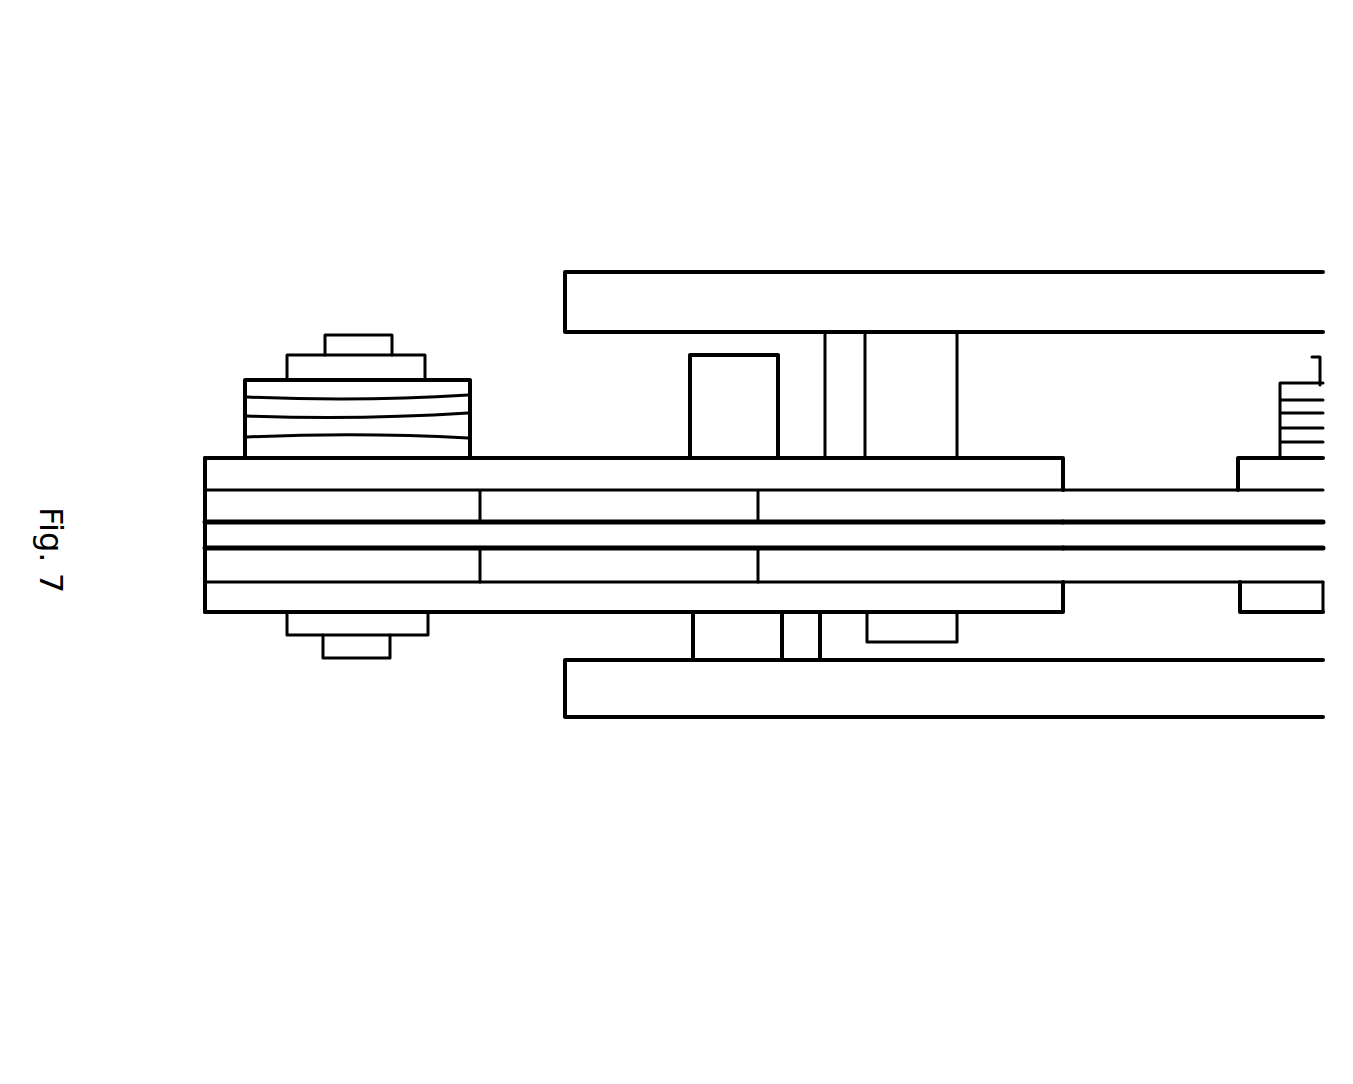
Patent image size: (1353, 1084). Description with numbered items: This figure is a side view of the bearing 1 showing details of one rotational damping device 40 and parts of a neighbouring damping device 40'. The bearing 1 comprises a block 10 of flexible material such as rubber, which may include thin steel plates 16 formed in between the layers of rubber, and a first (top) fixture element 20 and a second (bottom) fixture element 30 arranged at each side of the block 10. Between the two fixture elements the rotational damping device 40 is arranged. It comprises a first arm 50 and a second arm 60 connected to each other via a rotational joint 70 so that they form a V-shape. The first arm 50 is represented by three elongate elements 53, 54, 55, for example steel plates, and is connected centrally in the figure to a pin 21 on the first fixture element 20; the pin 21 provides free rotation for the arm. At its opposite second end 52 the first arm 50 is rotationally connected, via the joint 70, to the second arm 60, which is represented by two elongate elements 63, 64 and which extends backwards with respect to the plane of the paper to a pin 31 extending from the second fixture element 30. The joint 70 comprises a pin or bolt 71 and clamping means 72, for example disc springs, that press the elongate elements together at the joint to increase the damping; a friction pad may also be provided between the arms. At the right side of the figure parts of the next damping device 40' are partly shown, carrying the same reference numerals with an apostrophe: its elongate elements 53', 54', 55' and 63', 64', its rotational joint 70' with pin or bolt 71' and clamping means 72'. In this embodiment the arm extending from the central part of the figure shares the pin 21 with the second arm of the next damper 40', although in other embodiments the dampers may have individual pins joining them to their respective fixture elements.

The bearing 1 is at (978, 218).
The block 10 is at (1103, 372).
The steel plates 16 is at (845, 350).
The first fixture element 20 is at (622, 272).
The pin 21 is at (906, 355).
The second fixture element 30 is at (563, 703).
The pin 31 is at (735, 380).
The rotational damping device 40 is at (312, 701).
The next rotational damping device 40' is at (1321, 684).
The first arm 50 is at (602, 521).
The second end 52 is at (222, 630).
The elongate element 53 is at (634, 628).
The elongate element 53' is at (1243, 697).
The elongate element 54 is at (634, 418).
The elongate element 54' is at (1193, 654).
The elongate element 55 is at (634, 355).
The elongate element 55' is at (1249, 432).
The second arm 60 is at (1203, 584).
The elongate element 63 is at (600, 570).
The elongate element 63' is at (1193, 470).
The elongate element 64 is at (602, 512).
The elongate element 64' is at (1193, 588).
The rotational joint 70 is at (324, 489).
The rotational joint 70' is at (1263, 567).
The pin or bolt 71 is at (365, 500).
The pin or bolt 71' is at (1294, 363).
The clamping means 72 is at (324, 401).
The clamping means 72' is at (1274, 420).